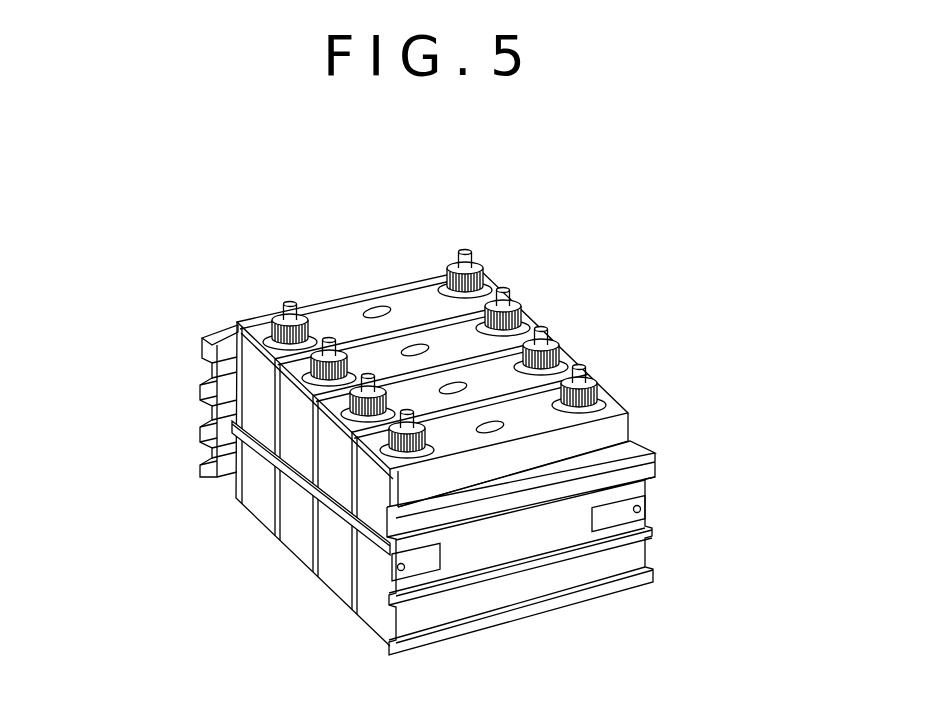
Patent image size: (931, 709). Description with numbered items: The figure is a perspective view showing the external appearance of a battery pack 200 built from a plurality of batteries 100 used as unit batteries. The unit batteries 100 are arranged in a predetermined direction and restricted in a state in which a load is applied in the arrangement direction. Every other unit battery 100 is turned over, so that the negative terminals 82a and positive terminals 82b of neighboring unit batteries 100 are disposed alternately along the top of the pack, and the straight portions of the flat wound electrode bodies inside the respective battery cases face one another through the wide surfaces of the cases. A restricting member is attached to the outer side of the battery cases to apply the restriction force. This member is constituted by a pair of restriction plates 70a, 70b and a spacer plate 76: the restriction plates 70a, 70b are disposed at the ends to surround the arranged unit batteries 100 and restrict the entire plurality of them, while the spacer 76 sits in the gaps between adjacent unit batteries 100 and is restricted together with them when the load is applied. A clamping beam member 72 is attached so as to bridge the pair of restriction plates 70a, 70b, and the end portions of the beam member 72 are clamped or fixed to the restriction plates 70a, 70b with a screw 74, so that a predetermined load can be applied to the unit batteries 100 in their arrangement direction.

The battery pack 200 is at (486, 206).
The battery 100 is at (437, 333).
The negative terminal 82a is at (462, 252).
The positive terminal 82b is at (290, 303).
The restriction plate 70a is at (633, 452).
The restriction plate 70b is at (215, 333).
The clamping beam member 72 is at (276, 463).
The screw 74 is at (642, 509).
The spacer plate 76 is at (238, 497).